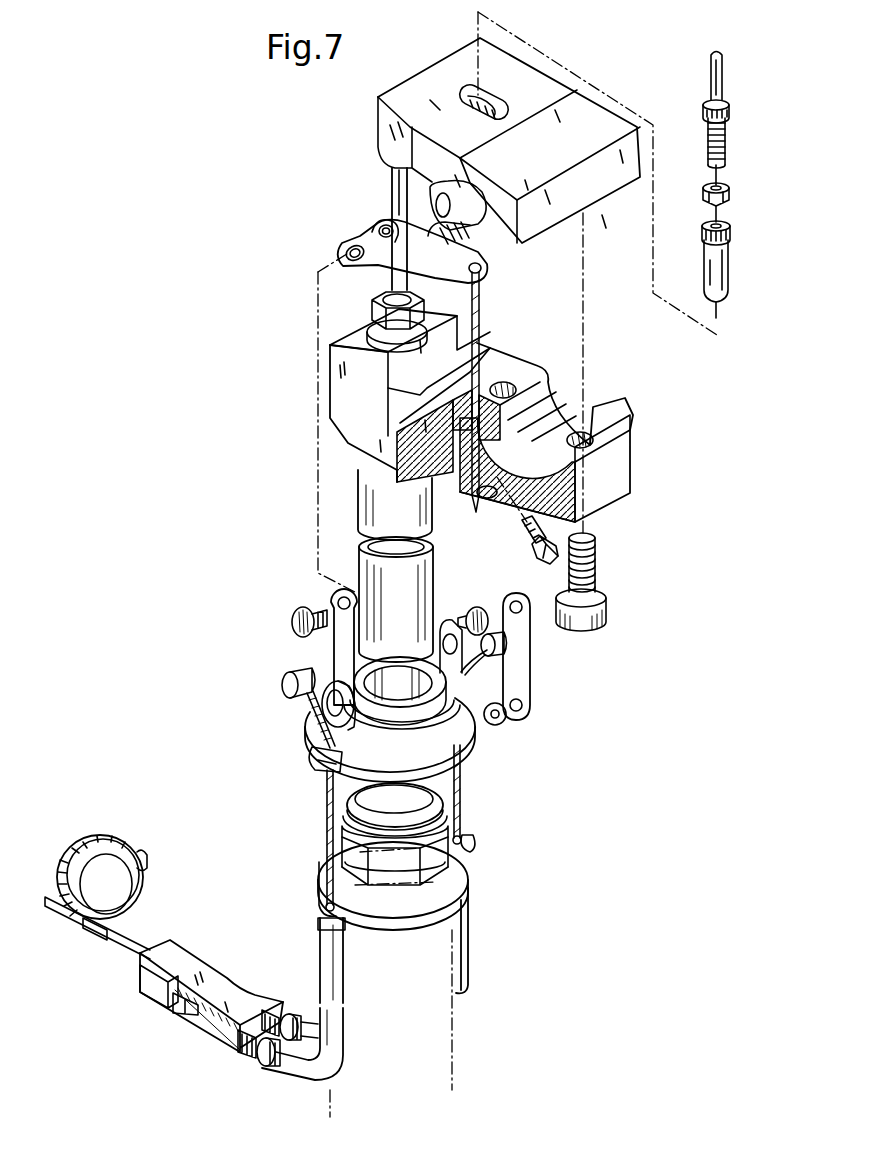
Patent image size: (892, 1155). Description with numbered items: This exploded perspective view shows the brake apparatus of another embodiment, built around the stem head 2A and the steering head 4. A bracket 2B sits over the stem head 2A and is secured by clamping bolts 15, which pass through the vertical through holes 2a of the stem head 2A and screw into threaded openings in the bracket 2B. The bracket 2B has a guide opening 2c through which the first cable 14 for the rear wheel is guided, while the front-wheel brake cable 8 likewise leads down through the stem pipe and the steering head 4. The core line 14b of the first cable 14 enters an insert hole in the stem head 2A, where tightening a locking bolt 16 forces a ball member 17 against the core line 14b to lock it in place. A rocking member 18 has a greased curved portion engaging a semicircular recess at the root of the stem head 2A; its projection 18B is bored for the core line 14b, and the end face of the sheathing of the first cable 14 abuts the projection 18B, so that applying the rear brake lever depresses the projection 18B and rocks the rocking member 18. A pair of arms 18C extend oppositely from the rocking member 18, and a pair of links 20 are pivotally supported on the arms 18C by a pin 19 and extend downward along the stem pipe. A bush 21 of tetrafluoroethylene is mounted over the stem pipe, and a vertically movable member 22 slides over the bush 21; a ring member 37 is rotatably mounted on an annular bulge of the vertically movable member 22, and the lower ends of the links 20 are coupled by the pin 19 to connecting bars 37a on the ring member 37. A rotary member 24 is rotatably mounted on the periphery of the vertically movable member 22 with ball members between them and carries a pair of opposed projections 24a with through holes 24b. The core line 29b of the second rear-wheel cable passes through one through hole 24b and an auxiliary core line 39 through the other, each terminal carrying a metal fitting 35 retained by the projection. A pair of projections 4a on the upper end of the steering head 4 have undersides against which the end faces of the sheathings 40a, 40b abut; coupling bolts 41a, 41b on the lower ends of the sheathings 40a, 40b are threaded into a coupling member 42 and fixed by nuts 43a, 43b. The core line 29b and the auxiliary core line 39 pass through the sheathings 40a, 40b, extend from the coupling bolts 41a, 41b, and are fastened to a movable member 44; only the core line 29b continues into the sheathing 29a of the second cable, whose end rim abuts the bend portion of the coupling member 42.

The stem head 2A is at (566, 429).
The bracket 2B is at (617, 177).
The vertical through holes 2a is at (505, 385).
The guide opening 2c is at (495, 96).
The steering head 4 is at (391, 931).
The projections 4a is at (466, 838).
The brake cable 8 is at (388, 184).
The first cable 14 is at (713, 87).
The core line 14b is at (480, 325).
The clamping bolts 15 is at (600, 612).
The locking bolt 16 is at (525, 530).
The ball member 17 is at (470, 483).
The rocking member 18 is at (402, 253).
The projection 18B is at (485, 273).
The arms 18C is at (383, 258).
The pin 19 is at (292, 622).
The links 20 is at (335, 652).
The bush 21 is at (353, 575).
The vertically movable member 22 is at (397, 699).
The rotary member 24 is at (442, 713).
The projections 24a is at (320, 750).
The through holes 24b is at (320, 764).
The sheathing 29a is at (130, 952).
The core line 29b is at (461, 793).
The metal fitting 35 is at (283, 682).
The ring member 37 is at (435, 712).
The connecting bars 37a is at (325, 722).
The auxiliary core line 39 is at (326, 827).
The sheathing 40a is at (475, 903).
The sheathing 40b is at (323, 940).
The coupling bolt 41a is at (292, 1016).
The coupling bolt 41b is at (254, 1064).
The coupling member 42 is at (194, 960).
The nut 43a is at (276, 1008).
The nut 43b is at (243, 1055).
The movable member 44 is at (150, 992).